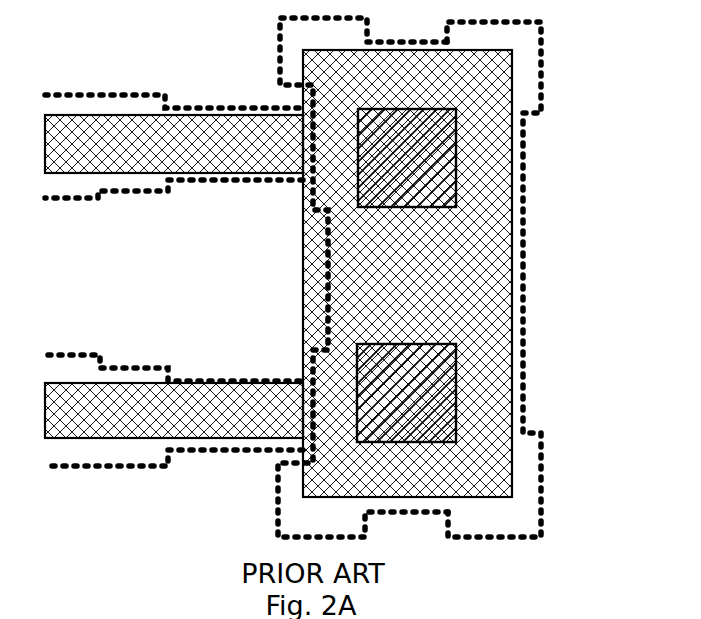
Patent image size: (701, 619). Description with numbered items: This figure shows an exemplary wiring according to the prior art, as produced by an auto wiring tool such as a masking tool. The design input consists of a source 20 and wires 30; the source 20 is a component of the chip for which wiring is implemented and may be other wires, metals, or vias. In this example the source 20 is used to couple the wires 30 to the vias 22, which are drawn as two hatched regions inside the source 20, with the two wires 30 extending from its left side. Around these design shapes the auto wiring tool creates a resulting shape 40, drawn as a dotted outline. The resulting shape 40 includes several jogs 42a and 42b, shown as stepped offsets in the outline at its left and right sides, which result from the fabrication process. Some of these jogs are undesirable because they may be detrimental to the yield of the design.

The source 20 is at (382, 68).
The vias 22 is at (512, 148).
The wires 30 is at (246, 108).
The resulting shape 40 is at (243, 181).
The jog 42a is at (282, 29).
The jog 42b is at (545, 33).